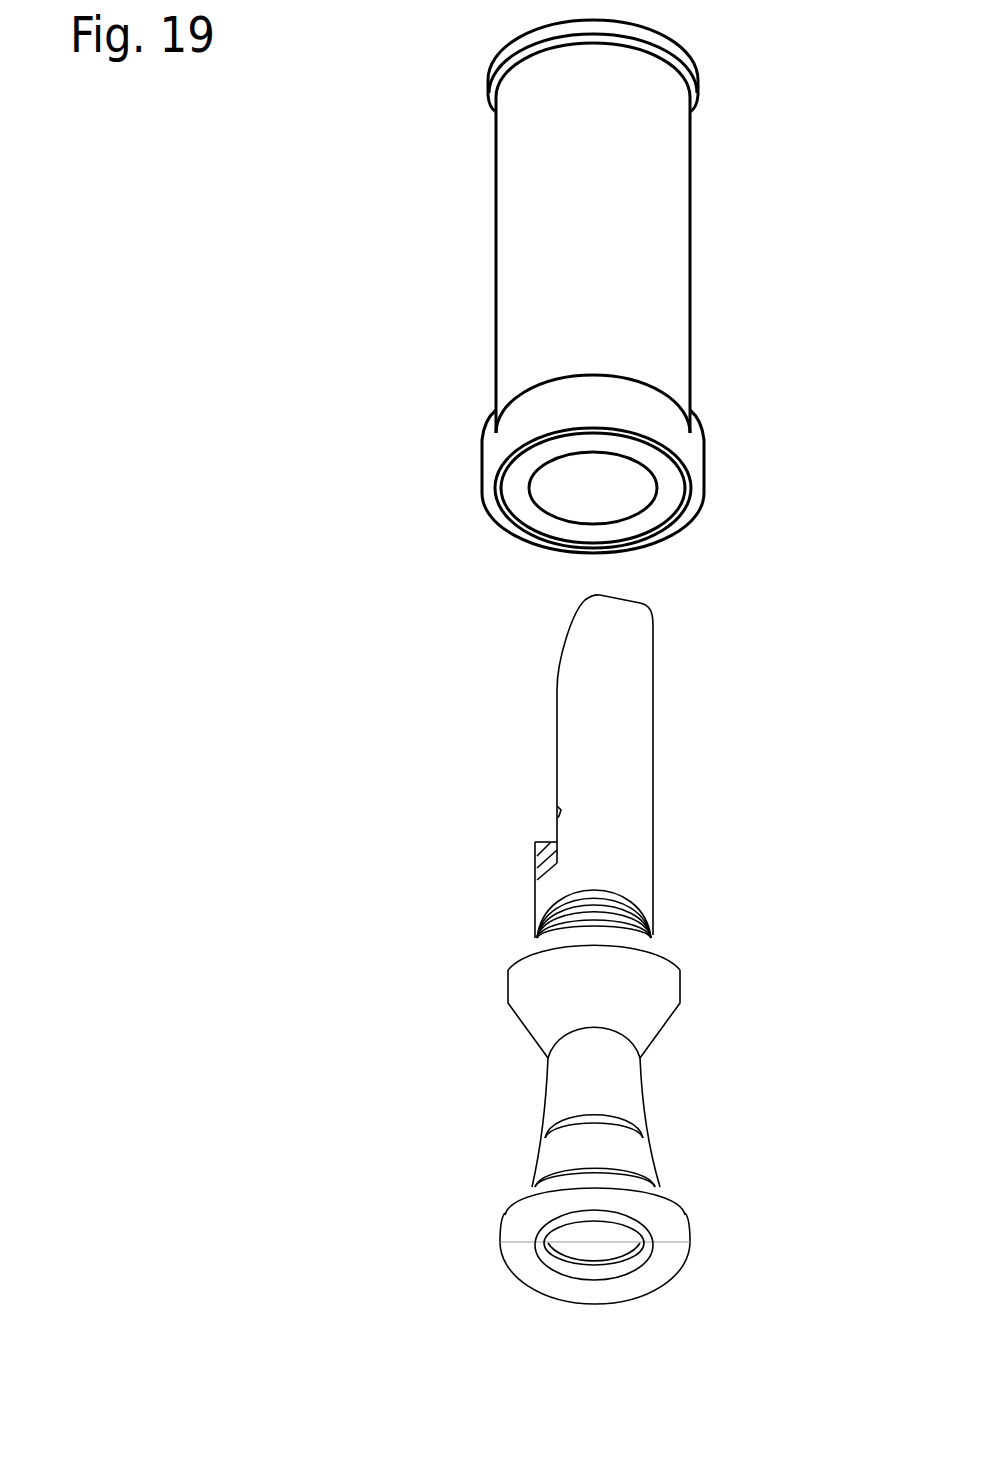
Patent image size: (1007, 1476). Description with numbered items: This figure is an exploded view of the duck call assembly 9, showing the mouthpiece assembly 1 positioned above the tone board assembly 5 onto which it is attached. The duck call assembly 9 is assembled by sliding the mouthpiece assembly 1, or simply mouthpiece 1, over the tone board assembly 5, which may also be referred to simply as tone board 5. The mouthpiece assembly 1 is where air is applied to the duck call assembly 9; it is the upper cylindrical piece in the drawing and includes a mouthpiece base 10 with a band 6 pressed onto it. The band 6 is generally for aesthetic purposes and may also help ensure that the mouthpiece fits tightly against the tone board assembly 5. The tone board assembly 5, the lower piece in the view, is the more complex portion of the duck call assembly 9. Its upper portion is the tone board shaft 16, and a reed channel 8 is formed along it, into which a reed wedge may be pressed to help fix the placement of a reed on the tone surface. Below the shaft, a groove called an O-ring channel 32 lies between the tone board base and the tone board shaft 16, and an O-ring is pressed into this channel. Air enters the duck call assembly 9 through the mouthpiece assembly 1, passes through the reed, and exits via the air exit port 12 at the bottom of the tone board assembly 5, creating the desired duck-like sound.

The mouthpiece assembly 1 is at (716, 273).
The tone board assembly 5 is at (723, 1130).
The band 6 is at (500, 435).
The reed channel 8 is at (543, 867).
The duck call assembly 9 is at (780, 168).
The mouthpiece base 10 is at (520, 198).
The air exit port 12 is at (595, 1266).
The tone board shaft 16 is at (633, 793).
The O-ring channel 32 is at (627, 912).